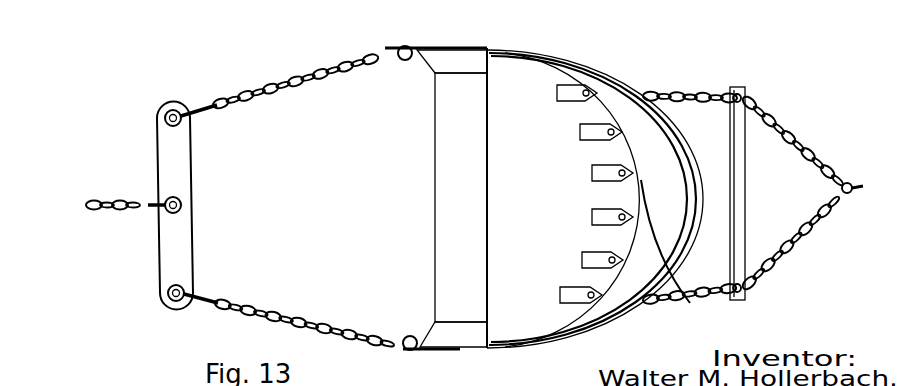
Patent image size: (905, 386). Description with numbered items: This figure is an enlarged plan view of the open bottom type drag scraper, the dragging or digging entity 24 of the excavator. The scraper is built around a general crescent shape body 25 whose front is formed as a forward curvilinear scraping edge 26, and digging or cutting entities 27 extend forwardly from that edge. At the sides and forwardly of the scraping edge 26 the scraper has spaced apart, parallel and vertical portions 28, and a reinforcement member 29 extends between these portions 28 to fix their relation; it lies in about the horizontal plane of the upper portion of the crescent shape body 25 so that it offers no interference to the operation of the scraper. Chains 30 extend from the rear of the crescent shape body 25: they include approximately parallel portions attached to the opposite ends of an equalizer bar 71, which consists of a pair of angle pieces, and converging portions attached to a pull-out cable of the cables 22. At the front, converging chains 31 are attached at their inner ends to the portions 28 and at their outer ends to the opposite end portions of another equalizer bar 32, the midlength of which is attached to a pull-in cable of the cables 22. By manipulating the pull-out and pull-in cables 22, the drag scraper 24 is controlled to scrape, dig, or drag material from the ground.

The cables 22 is at (128, 212).
The dragging or digging entity 24 is at (424, 226).
The crescent shape body 25 is at (689, 299).
The forward curvilinear scraping edge 26 is at (614, 196).
The digging or cutting entities 27 is at (590, 262).
The vertical portions 28 is at (493, 50).
The reinforcement member 29 is at (450, 253).
The chains 30 is at (691, 93).
The converging chains 31 is at (326, 72).
The equalizer bar 32 is at (183, 247).
The equalizer bar 71 is at (738, 177).